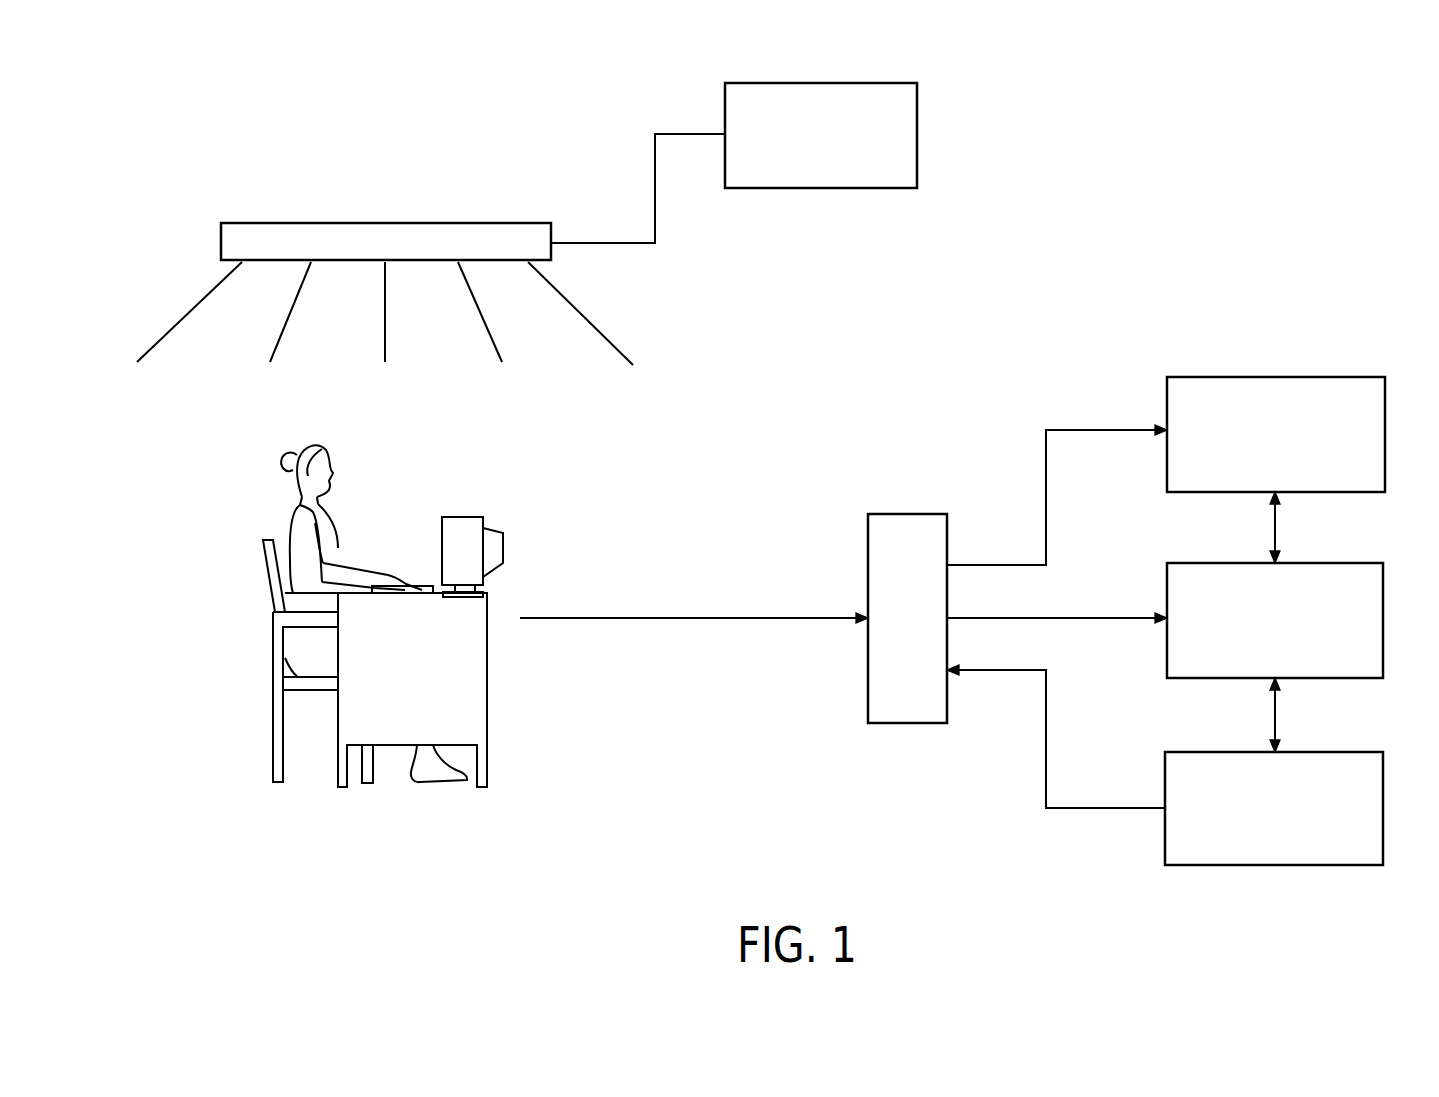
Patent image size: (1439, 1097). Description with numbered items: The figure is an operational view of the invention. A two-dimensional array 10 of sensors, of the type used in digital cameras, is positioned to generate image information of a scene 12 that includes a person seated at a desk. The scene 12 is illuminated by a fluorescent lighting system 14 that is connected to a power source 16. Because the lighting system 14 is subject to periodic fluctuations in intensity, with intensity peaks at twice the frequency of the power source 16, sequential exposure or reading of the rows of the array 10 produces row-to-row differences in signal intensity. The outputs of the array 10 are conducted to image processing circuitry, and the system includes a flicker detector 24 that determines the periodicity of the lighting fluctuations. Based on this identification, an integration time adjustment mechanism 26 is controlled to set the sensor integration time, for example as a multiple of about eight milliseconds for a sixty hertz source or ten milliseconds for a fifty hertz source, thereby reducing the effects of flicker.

The two-dimensional array 10 is at (875, 723).
The scene 12 is at (450, 465).
The fluorescent lighting system 14 is at (238, 222).
The power source 16 is at (885, 188).
The flicker detector 24 is at (1367, 377).
The integration time adjustment mechanism 26 is at (1365, 752).